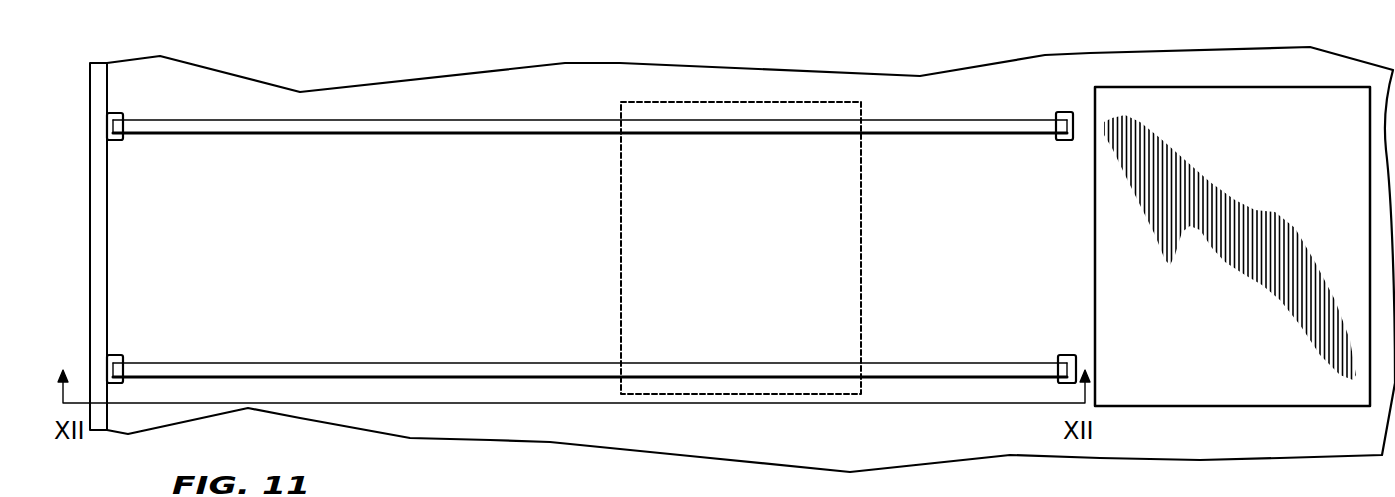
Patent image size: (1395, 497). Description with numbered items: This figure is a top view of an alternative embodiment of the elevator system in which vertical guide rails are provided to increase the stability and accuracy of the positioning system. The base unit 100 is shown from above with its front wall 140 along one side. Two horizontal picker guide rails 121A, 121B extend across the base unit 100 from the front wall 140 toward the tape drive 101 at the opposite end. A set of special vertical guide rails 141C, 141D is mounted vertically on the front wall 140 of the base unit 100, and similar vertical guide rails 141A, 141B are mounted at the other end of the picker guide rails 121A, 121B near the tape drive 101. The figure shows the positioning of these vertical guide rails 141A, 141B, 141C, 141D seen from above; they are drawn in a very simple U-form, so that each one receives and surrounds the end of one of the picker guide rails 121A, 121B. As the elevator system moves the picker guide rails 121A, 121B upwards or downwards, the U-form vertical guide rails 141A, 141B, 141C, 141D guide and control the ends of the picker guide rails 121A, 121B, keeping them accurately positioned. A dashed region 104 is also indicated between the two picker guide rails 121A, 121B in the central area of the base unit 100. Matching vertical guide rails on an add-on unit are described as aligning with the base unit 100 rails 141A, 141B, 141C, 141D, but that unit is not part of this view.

The base unit 100 is at (88, 236).
The tape drive 101 is at (1206, 384).
The transducer region 104 is at (652, 238).
The picker guide rail 121A is at (284, 368).
The picker guide rail 121B is at (292, 128).
The front wall 140 is at (96, 263).
The vertical guide rail 141A is at (1070, 353).
The vertical guide rail 141B is at (1066, 140).
The vertical guide rail 141C is at (112, 112).
The vertical guide rail 141D is at (116, 352).